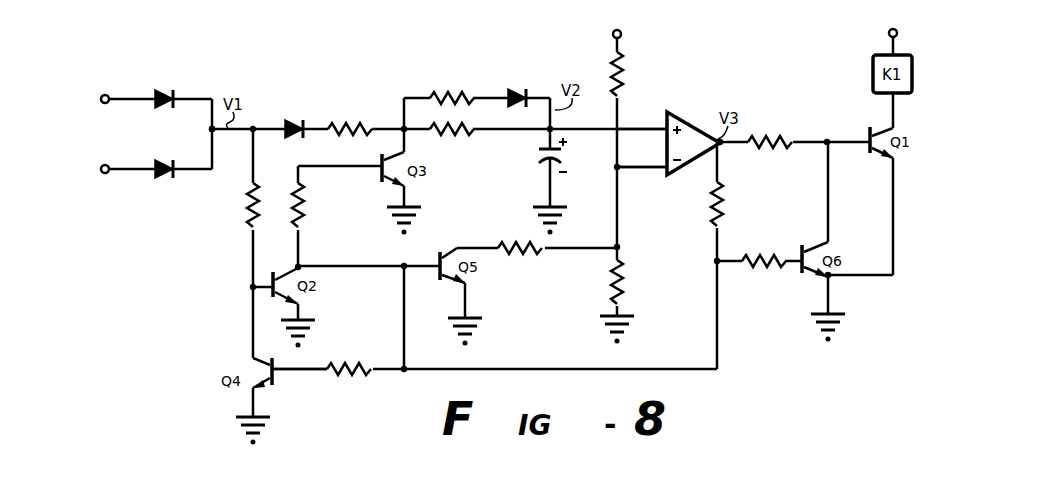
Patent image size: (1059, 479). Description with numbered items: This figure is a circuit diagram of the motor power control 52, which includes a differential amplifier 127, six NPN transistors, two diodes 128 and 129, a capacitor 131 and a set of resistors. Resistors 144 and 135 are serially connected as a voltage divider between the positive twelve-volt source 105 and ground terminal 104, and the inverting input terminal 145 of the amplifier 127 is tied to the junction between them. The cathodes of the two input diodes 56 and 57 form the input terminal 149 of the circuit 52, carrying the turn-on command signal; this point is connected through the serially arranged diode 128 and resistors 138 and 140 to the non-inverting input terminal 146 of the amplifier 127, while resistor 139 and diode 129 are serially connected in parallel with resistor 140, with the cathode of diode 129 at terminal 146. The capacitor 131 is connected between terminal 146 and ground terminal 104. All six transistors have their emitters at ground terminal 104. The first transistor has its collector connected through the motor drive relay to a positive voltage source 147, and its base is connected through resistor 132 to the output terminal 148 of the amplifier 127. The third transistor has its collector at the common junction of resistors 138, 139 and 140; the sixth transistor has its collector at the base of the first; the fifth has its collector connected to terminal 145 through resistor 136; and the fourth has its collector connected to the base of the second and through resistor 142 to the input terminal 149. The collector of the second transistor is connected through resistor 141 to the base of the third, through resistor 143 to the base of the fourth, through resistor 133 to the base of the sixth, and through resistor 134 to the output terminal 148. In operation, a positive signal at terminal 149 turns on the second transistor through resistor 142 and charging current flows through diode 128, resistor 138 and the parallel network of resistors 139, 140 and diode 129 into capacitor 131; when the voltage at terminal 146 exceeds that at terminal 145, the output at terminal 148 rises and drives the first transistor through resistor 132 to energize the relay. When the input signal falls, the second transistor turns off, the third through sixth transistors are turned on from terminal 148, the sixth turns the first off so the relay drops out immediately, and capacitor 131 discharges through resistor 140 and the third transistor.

The diode 56 is at (173, 96).
The diode 57 is at (173, 174).
The input terminal 149 is at (211, 130).
The diode 128 is at (297, 126).
The resistor 138 is at (346, 126).
The resistor 139 is at (452, 95).
The diode 129 is at (525, 81).
The resistor 140 is at (452, 133).
The capacitor 131 is at (545, 162).
The ground terminal 104 is at (538, 207).
The resistor 144 is at (620, 60).
The positive twelve-volt source 105 is at (613, 35).
The non-inverting input terminal 146 is at (645, 128).
The inverting input terminal 145 is at (642, 168).
The differential amplifier 127 is at (690, 126).
The output terminal 148 is at (722, 150).
The resistor 132 is at (772, 139).
The resistor 134 is at (714, 207).
The resistor 133 is at (760, 258).
The positive voltage source 147 is at (889, 34).
The resistor 142 is at (250, 216).
The resistor 141 is at (300, 208).
The resistor 136 is at (515, 251).
The resistor 135 is at (614, 272).
The resistor 143 is at (352, 366).
The motor power control 52 is at (822, 369).